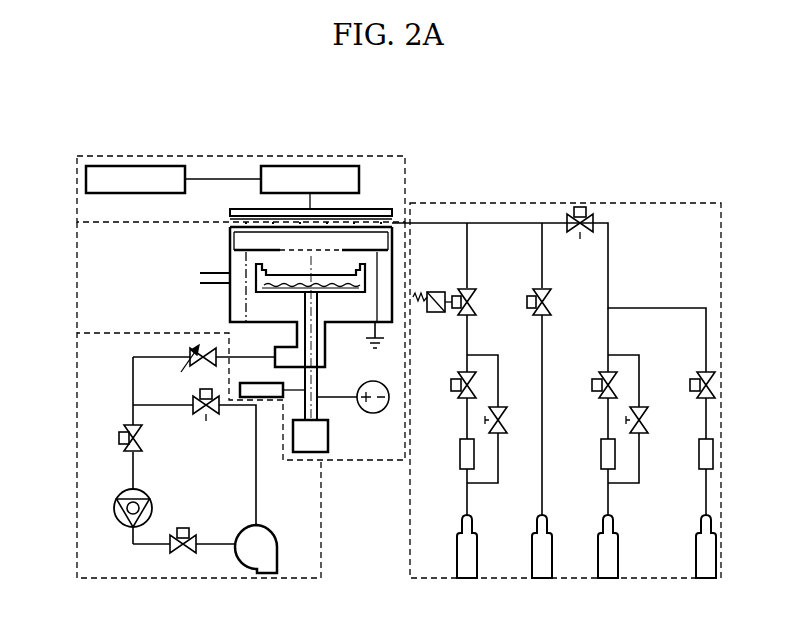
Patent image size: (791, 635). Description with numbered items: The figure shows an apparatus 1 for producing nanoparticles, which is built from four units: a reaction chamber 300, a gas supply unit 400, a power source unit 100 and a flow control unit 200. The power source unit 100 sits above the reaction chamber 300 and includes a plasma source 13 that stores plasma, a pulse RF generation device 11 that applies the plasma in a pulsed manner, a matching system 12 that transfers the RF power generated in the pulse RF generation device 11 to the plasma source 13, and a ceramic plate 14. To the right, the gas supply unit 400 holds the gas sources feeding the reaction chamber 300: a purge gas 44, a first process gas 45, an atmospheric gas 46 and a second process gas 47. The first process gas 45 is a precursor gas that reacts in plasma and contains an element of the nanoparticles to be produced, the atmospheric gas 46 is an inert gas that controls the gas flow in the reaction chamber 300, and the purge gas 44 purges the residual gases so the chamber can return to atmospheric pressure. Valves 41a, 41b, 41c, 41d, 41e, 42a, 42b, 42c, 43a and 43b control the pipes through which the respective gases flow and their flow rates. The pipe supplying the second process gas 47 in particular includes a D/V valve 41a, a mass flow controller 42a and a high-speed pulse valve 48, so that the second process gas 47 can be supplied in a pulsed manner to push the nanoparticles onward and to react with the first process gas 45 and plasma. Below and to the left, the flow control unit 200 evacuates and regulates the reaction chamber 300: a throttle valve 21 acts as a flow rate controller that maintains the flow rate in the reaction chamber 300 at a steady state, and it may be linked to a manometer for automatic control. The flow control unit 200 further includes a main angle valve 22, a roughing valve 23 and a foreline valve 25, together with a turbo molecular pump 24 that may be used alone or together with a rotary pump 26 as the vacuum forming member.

The apparatus 1 is at (75, 134).
The pulse RF generation device 11 is at (135, 166).
The matching system 12 is at (310, 166).
The plasma source 13 is at (230, 210).
The ceramic plate 14 is at (392, 209).
The power source unit 100 is at (77, 193).
The reaction chamber 300 is at (77, 283).
The flow control unit 200 is at (77, 447).
The gas supply unit 400 is at (521, 203).
The throttle valve 21 is at (181, 372).
The main angle valve 22 is at (119, 438).
The roughing valve 23 is at (206, 417).
The turbo molecular pump 24 is at (120, 493).
The foreline valve 25 is at (182, 528).
The rotary pump 26 is at (277, 528).
The D/V valve 41a is at (451, 386).
The valve 41b is at (553, 302).
The valve 41c is at (578, 233).
The valve 41d is at (592, 386).
The valve 41e is at (690, 386).
The mass flow controller 42a is at (460, 455).
The valve 42b is at (601, 455).
The valve 42c is at (699, 455).
The valve 43a is at (507, 420).
The valve 43b is at (648, 420).
The purge gas 44 is at (532, 556).
The first process gas 45 is at (598, 556).
The atmospheric gas 46 is at (696, 556).
The second process gas 47 is at (457, 556).
The high-speed pulse valve 48 is at (478, 302).